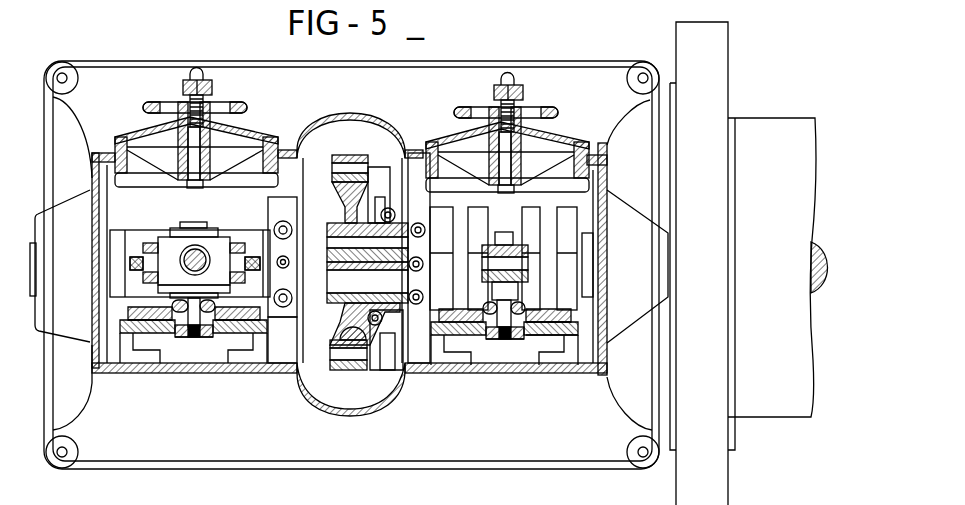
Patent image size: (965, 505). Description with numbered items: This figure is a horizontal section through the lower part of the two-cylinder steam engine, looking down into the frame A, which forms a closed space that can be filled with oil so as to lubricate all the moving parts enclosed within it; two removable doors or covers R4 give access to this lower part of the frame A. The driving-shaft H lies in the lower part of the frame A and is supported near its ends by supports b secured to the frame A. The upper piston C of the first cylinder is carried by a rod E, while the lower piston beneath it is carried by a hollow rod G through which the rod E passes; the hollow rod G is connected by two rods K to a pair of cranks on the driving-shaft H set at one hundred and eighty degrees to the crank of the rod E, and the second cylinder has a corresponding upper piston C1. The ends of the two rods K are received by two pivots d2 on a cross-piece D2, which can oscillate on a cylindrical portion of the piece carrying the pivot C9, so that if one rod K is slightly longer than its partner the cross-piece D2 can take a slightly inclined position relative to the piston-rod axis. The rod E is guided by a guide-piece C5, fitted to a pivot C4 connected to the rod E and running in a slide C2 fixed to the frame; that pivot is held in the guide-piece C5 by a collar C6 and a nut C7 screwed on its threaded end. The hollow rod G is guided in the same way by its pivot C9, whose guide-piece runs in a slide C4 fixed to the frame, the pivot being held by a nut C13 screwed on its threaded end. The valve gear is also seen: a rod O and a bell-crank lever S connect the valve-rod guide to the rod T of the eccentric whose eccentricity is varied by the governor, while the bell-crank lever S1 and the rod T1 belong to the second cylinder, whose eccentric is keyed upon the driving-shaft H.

The frame A is at (338, 117).
The support b is at (349, 266).
The driving-shaft H is at (33, 298).
The removable door or cover R4 is at (122, 138).
The connecting-rod K is at (150, 243).
The piston-rod E is at (183, 252).
The hollow piston-rod G is at (205, 248).
The pivot d2 is at (135, 262).
The cross-piece D2 is at (202, 294).
The rod O is at (355, 157).
The eccentric-rod T is at (378, 188).
The bell-crank lever S is at (345, 215).
The bell-crank lever S1 is at (345, 312).
The eccentric-rod T1 is at (388, 362).
The piston C is at (220, 345).
The piston C1 is at (470, 230).
The slide C2 is at (470, 343).
The slide C4 is at (238, 343).
The guide-piece C5 is at (550, 343).
The collar C6 is at (520, 290).
The nut C7 is at (500, 340).
The pivot C9 is at (197, 338).
The nut C13 is at (178, 343).